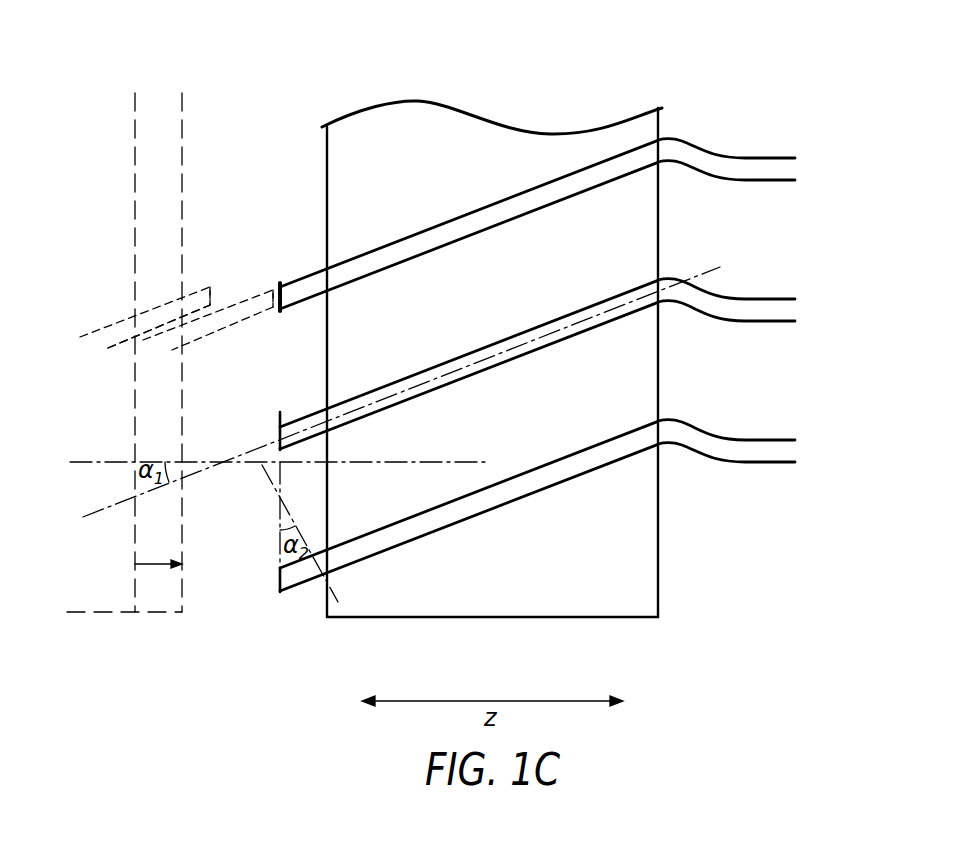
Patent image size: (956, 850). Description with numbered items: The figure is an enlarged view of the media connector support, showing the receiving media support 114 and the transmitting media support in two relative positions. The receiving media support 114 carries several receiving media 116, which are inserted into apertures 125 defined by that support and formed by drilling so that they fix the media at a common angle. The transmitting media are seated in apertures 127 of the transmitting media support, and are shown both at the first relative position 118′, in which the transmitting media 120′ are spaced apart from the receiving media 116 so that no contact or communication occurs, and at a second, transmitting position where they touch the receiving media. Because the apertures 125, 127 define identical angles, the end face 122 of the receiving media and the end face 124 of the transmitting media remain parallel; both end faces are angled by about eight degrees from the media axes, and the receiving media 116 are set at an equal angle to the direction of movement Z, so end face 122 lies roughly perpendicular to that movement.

The receiving media support 114 is at (642, 583).
The receiving media 116 is at (503, 215).
The apertures 125 is at (377, 553).
The end face 122 is at (283, 298).
The end face 124 is at (268, 303).
The apertures 127 is at (173, 323).
The transmitting media in first position 120′ is at (157, 313).
The first relative position 118′ is at (100, 588).